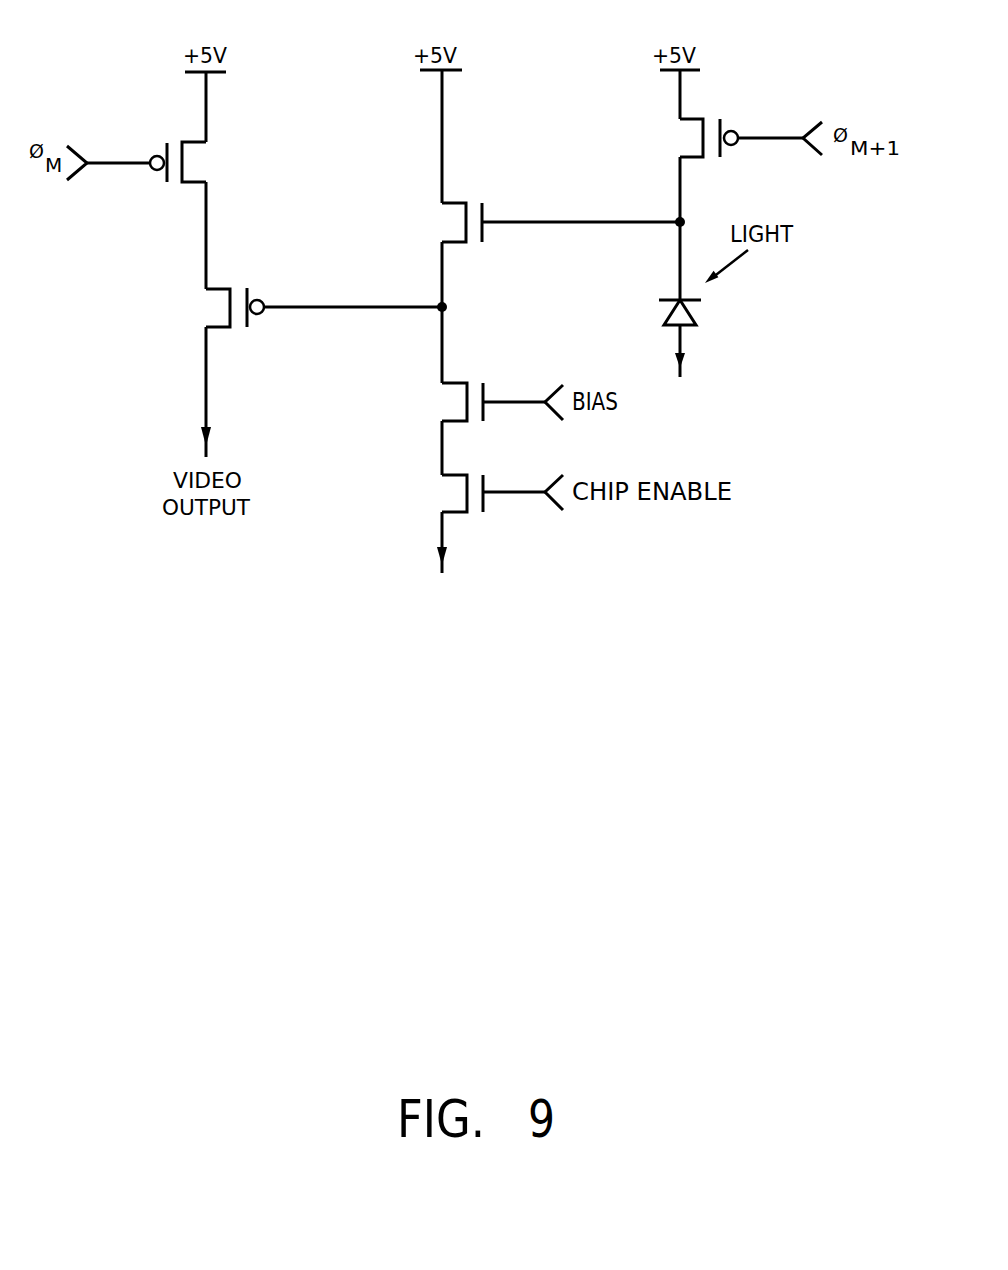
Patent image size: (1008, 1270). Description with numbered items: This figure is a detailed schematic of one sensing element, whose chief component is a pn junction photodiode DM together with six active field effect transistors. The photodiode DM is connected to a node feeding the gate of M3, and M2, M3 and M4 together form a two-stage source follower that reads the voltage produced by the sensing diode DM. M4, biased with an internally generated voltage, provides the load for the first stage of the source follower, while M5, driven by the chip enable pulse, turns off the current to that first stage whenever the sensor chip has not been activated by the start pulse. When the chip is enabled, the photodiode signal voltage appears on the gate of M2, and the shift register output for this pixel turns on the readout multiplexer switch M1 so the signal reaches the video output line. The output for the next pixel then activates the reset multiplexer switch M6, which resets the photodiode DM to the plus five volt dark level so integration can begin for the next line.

The readout multiplexer switch M1 is at (194, 162).
The source follower transistor M2 is at (218, 307).
The source follower transistor M3 is at (443, 222).
The source follower load transistor M4 is at (445, 402).
The chip enable transistor M5 is at (445, 493).
The reset multiplexer switch M6 is at (690, 138).
The pn junction photodiode DM is at (699, 317).